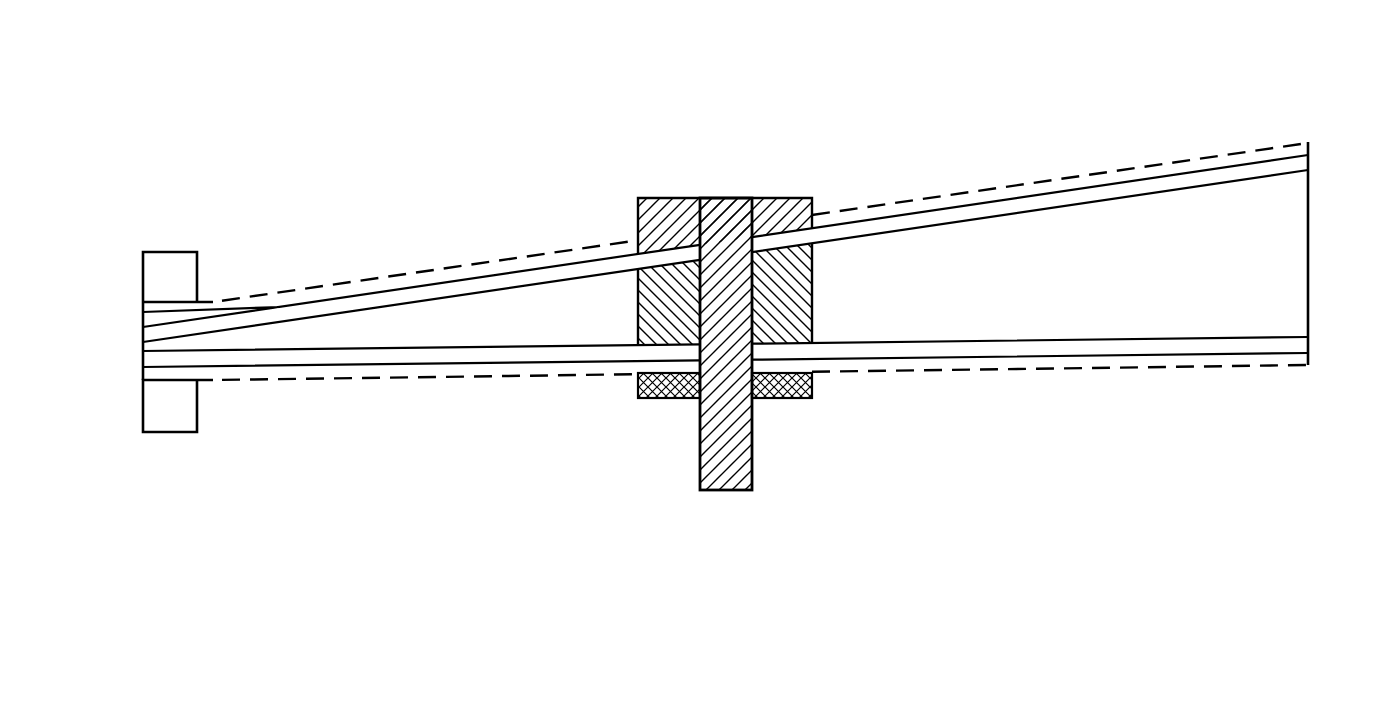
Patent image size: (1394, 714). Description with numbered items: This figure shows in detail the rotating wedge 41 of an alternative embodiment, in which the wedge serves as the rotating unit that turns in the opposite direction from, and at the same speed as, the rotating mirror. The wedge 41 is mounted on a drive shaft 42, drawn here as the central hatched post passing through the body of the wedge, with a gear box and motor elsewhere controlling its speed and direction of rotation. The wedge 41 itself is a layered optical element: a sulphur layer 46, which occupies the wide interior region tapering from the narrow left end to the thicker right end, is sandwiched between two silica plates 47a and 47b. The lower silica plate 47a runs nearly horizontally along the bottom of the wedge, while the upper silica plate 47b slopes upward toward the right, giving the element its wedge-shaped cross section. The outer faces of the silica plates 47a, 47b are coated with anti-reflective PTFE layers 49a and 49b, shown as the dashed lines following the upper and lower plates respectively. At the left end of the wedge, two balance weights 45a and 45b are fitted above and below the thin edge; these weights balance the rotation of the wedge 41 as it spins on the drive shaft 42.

The rotating wedge 41 is at (754, 70).
The drive shaft 42 is at (753, 438).
The balance weight 45a is at (167, 250).
The balance weight 45b is at (170, 433).
The sulphur layer 46 is at (1272, 255).
The silica plate 47a is at (1173, 347).
The silica plate 47b is at (1151, 188).
The anti-reflective PTFE layer 49a is at (290, 288).
The anti-reflective PTFE layer 49b is at (318, 381).